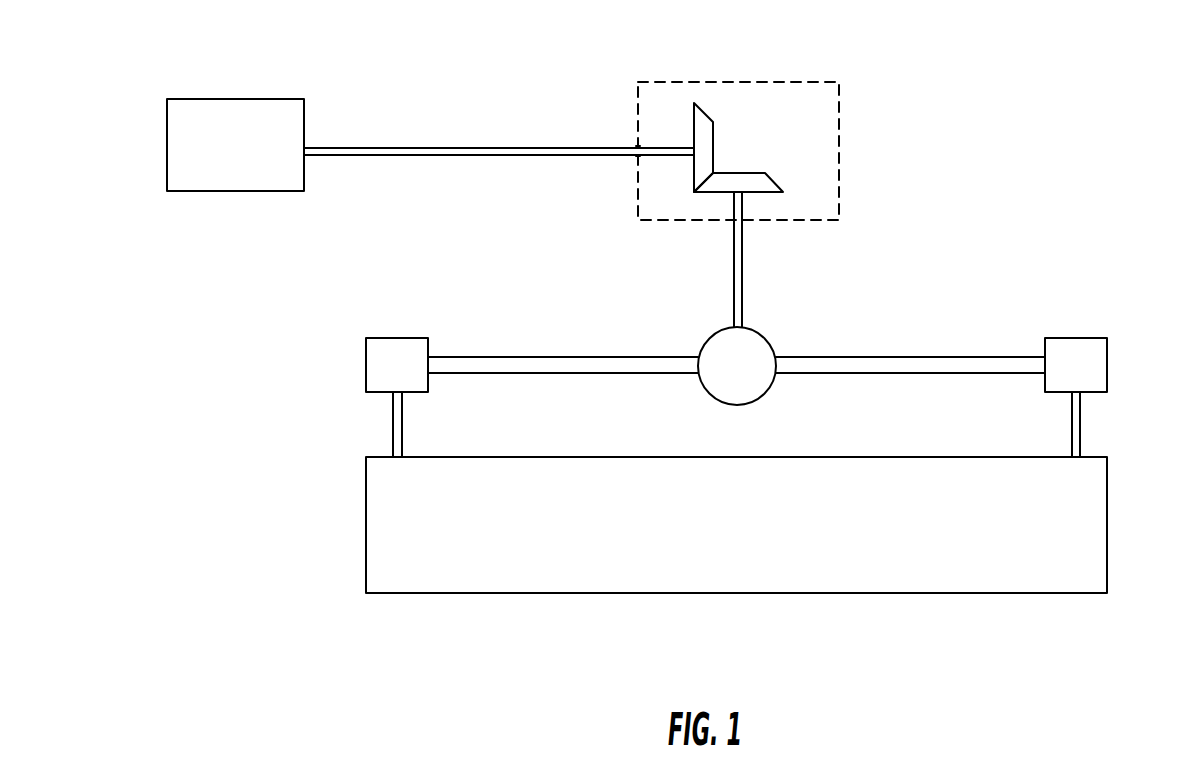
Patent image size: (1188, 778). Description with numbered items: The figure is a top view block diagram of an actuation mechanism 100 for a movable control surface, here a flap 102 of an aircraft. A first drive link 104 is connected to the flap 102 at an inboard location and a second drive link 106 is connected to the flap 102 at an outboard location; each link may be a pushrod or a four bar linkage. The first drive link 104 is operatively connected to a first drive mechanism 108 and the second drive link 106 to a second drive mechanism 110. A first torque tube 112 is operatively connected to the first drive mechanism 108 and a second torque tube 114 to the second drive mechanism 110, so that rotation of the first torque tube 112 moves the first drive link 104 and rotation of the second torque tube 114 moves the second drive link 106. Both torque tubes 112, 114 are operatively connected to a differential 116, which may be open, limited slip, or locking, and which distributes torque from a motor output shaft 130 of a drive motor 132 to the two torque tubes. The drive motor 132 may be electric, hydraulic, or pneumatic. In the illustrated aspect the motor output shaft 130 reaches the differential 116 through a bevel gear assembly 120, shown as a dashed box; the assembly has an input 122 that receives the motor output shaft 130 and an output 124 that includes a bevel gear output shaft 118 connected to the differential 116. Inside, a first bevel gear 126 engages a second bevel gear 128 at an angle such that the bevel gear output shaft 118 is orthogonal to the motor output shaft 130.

The actuation mechanism 100 is at (1074, 62).
The flap 102 is at (778, 577).
The first drive link 104 is at (402, 430).
The second drive link 106 is at (1082, 432).
The first drive mechanism 108 is at (395, 338).
The second drive mechanism 110 is at (1077, 338).
The first torque tube 112 is at (572, 357).
The second torque tube 114 is at (915, 357).
The differential 116 is at (765, 336).
The bevel gear output shaft 118 is at (743, 268).
The bevel gear assembly 120 is at (839, 82).
The shaft coupling 122 is at (638, 147).
The output 124 is at (733, 221).
The first bevel gear 126 is at (753, 173).
The second bevel gear 128 is at (708, 122).
The motor output shaft 130 is at (497, 147).
The drive motor 132 is at (253, 99).